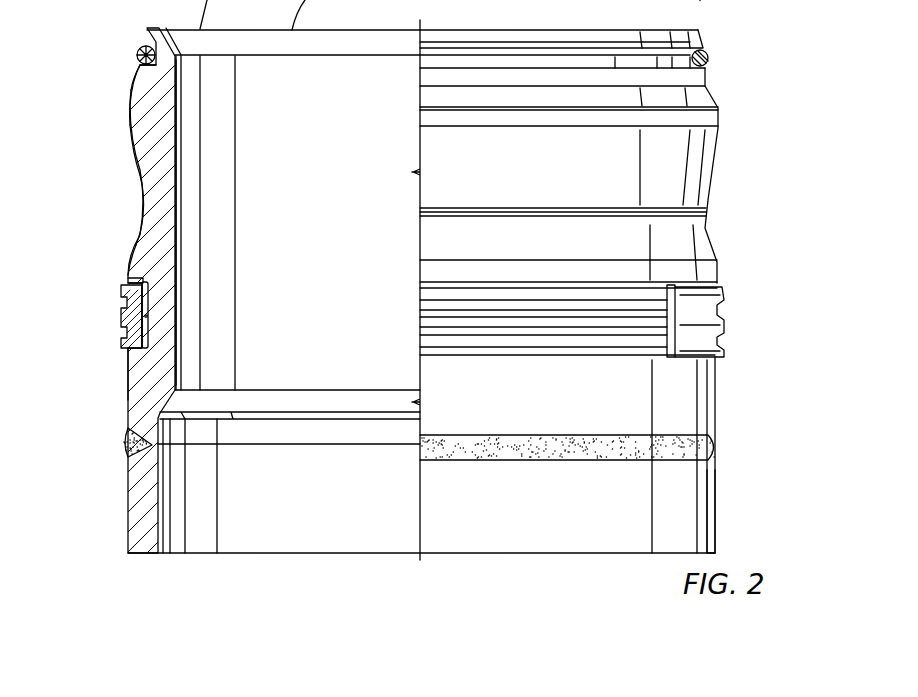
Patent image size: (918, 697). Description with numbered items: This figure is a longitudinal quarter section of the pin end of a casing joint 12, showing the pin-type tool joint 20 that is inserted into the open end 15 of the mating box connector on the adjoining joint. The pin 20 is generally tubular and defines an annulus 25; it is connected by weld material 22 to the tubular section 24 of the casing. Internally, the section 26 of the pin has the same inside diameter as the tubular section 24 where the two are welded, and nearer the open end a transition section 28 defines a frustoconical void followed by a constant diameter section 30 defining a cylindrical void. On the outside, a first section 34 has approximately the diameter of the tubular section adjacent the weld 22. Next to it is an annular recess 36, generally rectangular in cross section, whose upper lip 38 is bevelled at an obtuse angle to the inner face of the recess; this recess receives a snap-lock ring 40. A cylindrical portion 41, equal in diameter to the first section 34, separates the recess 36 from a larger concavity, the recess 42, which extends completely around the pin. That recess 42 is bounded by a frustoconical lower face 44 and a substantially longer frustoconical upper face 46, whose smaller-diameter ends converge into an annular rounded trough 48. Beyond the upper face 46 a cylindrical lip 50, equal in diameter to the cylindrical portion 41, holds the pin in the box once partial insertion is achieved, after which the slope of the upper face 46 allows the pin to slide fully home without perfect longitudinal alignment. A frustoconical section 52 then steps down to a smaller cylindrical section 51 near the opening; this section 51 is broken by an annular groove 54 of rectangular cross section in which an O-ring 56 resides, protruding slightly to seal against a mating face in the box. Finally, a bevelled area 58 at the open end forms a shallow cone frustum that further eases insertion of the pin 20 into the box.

The casing joint 12 is at (93, 504).
The open end 15 is at (740, 0).
The pin-type tool joint 20 is at (682, 390).
The weld material 22 is at (719, 452).
The tubular section 24 is at (716, 512).
The annulus 25 is at (362, 199).
The section 26 is at (128, 428).
The transition section 28 is at (128, 400).
The constant diameter section 30 is at (180, 177).
The first section 34 is at (128, 365).
The annular recess 36 is at (148, 317).
The upper lip 38 is at (147, 272).
The snap-lock ring 40 is at (121, 312).
The cylindrical portion 41 is at (128, 262).
The recess 42 is at (86, 195).
The lower face 44 is at (131, 236).
The upper face 46 is at (139, 170).
The trough 48 is at (143, 205).
The cylindrical lip 50 is at (130, 117).
The cylindrical section 51 is at (140, 70).
The frustoconical section 52 is at (134, 89).
The annular groove 54 is at (152, 63).
The O-ring 56 is at (138, 50).
The bevelled area 58 is at (146, 33).